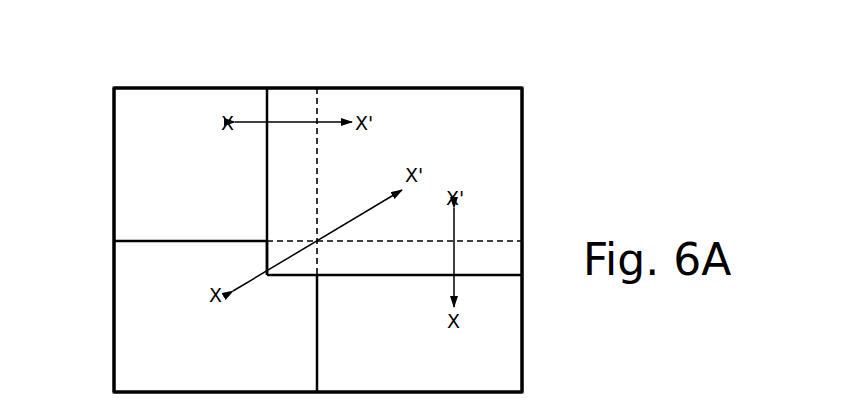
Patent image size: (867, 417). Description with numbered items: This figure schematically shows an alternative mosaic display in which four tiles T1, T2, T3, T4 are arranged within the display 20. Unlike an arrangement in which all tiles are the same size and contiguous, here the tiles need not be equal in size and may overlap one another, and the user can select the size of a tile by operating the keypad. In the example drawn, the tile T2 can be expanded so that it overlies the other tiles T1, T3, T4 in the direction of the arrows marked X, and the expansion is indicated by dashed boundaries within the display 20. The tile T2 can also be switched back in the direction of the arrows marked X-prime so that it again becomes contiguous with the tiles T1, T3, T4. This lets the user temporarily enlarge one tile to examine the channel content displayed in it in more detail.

The display 20 is at (522, 206).
The tile T1 is at (130, 140).
The tile T2 is at (487, 107).
The tile T3 is at (503, 343).
The tile T4 is at (132, 326).